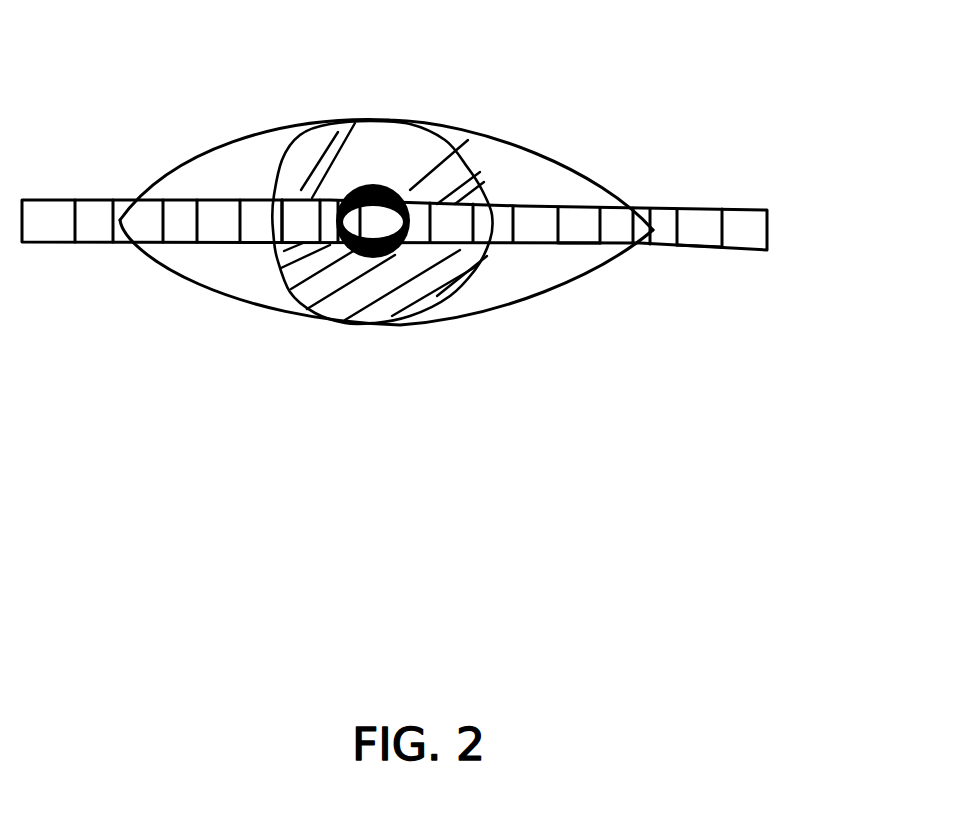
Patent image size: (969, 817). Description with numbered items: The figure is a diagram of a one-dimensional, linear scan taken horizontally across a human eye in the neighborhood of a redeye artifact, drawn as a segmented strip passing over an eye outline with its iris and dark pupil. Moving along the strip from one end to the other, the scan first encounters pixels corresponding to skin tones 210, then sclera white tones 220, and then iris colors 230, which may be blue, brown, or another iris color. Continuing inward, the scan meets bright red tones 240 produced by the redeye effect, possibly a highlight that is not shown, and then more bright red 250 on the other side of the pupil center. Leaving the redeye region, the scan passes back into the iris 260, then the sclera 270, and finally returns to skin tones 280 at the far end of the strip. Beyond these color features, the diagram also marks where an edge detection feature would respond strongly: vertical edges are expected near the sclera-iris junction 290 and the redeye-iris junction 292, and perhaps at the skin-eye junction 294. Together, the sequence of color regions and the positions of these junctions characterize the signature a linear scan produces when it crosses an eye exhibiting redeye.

The skin tones 210 is at (95, 200).
The sclera white tones 220 is at (213, 200).
The iris colors 230 is at (295, 200).
The bright red tones 240 is at (348, 188).
The more bright red 250 is at (413, 203).
The iris 260 is at (467, 203).
The sclera 270 is at (582, 242).
The skin tones 280 is at (703, 250).
The sclera-iris junction 290 is at (273, 243).
The redeye-iris junction 292 is at (338, 243).
The skin-eye junction 294 is at (650, 242).